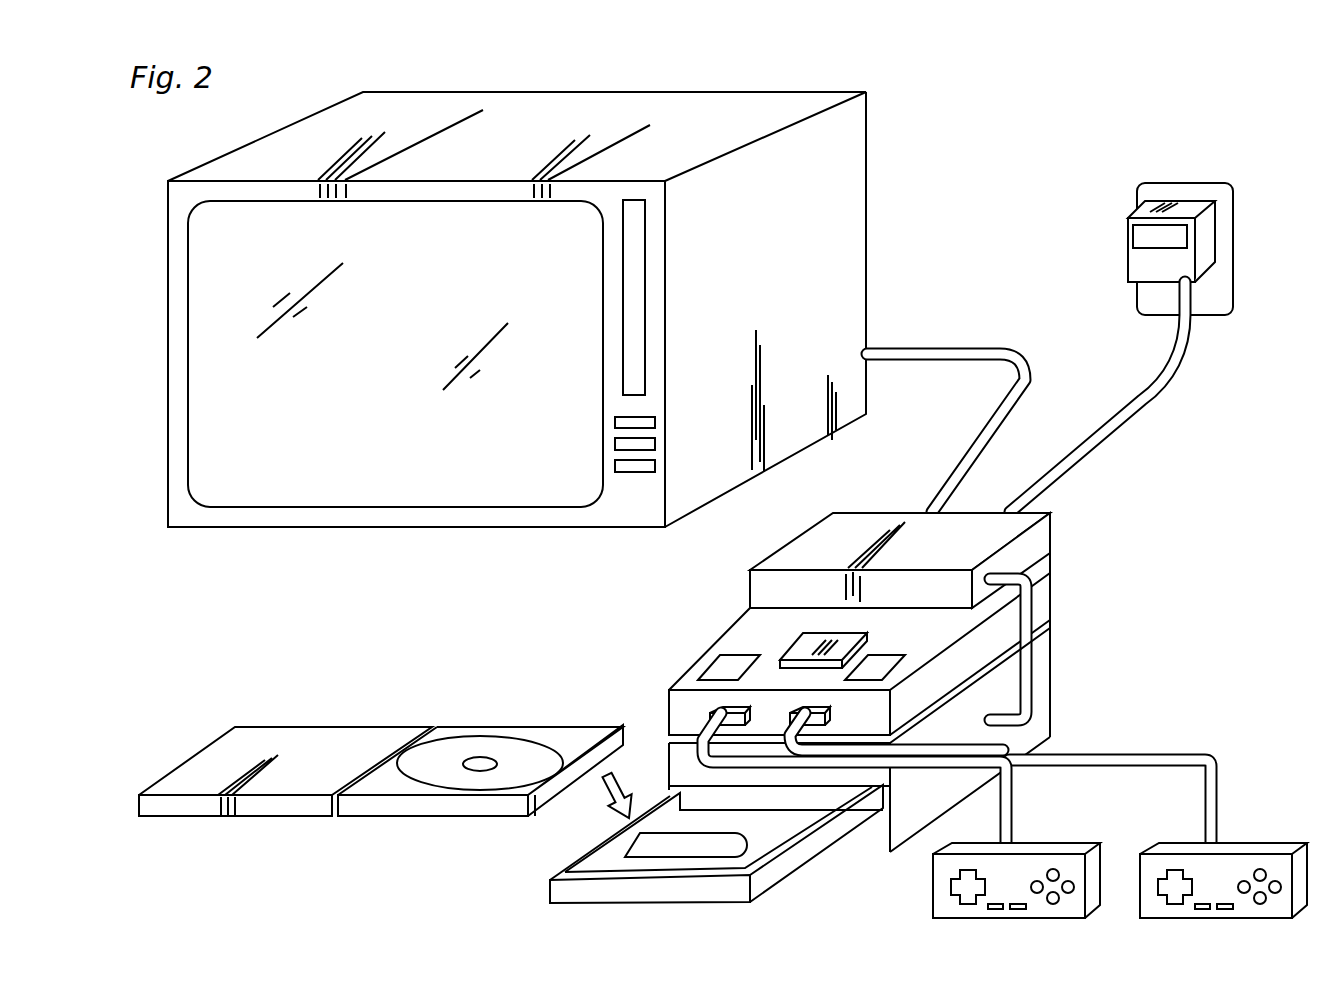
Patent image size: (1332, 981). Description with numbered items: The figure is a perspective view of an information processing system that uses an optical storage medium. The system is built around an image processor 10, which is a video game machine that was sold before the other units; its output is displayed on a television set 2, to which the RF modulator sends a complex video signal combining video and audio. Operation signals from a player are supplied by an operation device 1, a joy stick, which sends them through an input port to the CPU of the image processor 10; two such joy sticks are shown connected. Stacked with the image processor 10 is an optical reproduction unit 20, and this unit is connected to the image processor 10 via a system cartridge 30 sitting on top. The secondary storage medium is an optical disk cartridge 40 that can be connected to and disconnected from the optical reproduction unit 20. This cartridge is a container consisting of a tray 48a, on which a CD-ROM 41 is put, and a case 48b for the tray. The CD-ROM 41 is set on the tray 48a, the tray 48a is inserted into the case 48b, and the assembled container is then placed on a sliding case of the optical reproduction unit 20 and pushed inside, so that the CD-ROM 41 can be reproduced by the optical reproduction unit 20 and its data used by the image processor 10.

The operation device 1 is at (1063, 846).
The television set 2 is at (867, 157).
The image processor 10 is at (1052, 583).
The optical reproduction unit 20 is at (1053, 687).
The system cartridge 30 is at (860, 512).
The optical disk cartridge 40 is at (381, 742).
The CD-ROM 41 is at (518, 755).
The tray 48a is at (483, 724).
The case 48b is at (304, 724).